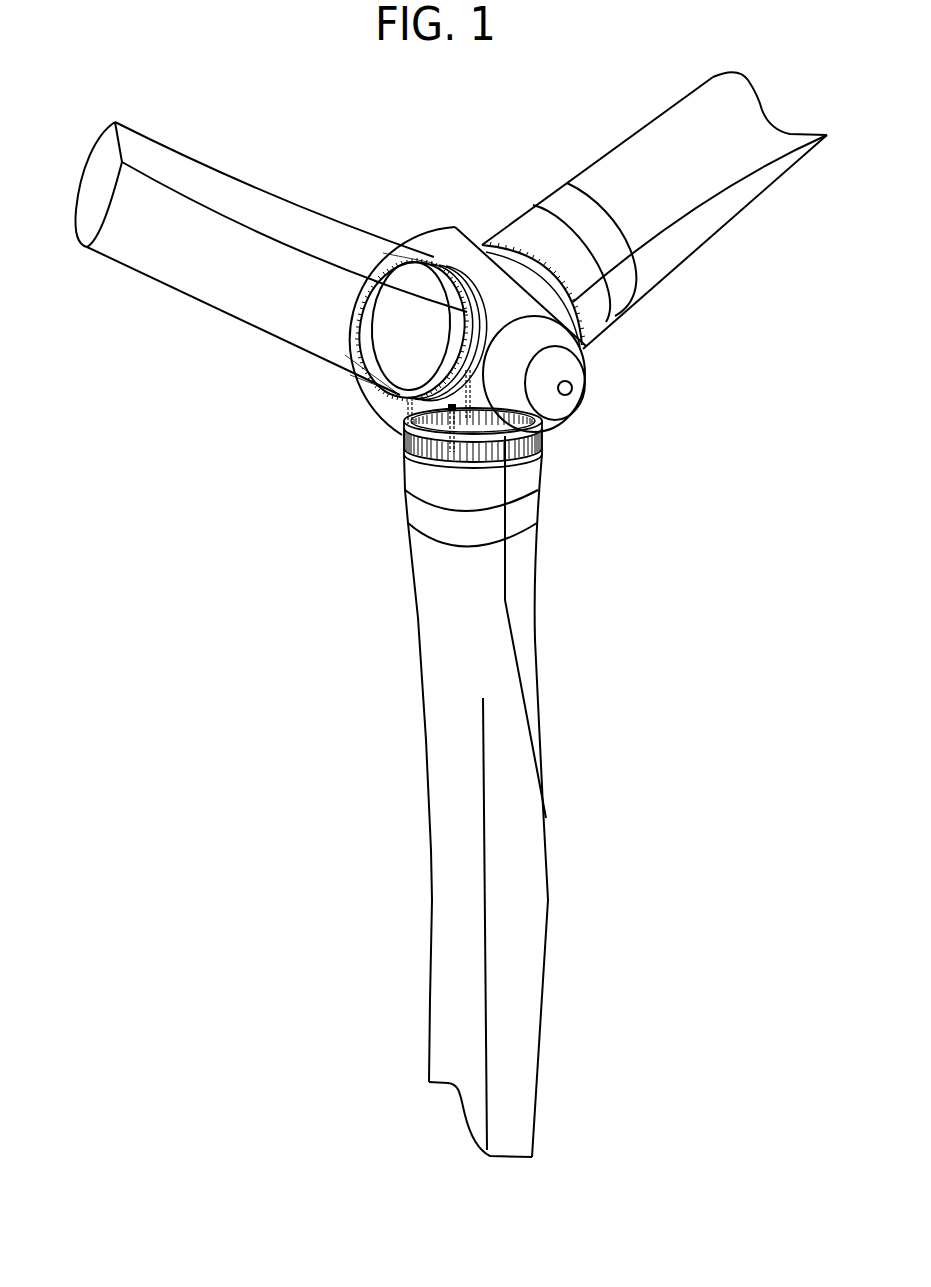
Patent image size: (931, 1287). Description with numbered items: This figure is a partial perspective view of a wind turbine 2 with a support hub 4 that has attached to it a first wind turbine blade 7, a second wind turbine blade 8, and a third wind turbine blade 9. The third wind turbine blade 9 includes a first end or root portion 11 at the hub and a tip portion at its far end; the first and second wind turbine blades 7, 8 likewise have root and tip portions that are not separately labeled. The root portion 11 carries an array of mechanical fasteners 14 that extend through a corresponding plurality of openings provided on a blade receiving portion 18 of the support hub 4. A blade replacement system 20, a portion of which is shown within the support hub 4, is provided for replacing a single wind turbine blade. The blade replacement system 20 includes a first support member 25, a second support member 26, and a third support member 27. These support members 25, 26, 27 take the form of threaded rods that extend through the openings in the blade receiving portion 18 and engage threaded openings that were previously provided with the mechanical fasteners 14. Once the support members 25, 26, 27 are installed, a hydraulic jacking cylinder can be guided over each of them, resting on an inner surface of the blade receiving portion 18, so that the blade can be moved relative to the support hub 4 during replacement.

The wind turbine 2 is at (223, 358).
The support hub 4 is at (431, 207).
The first wind turbine blade 7 is at (128, 273).
The second wind turbine blade 8 is at (632, 128).
The third wind turbine blade 9 is at (552, 577).
The root portion 11 is at (408, 477).
The mechanical fasteners 14 is at (537, 424).
The blade receiving portion 18 is at (400, 442).
The blade replacement system 20 is at (386, 399).
The first support member 25 is at (396, 420).
The second support member 26 is at (457, 430).
The third support member 27 is at (473, 389).